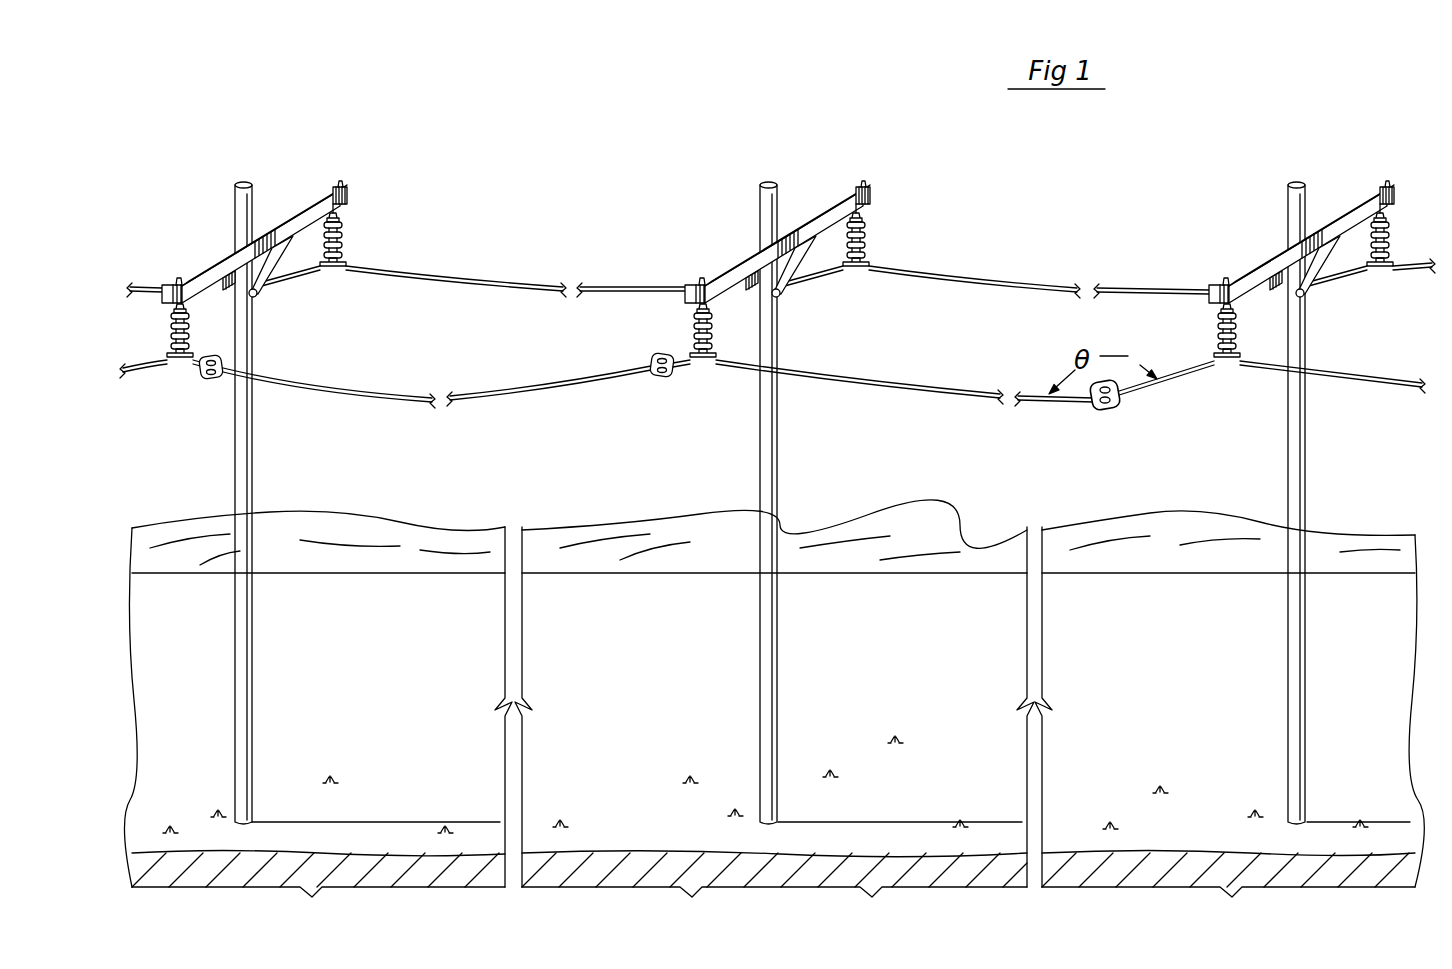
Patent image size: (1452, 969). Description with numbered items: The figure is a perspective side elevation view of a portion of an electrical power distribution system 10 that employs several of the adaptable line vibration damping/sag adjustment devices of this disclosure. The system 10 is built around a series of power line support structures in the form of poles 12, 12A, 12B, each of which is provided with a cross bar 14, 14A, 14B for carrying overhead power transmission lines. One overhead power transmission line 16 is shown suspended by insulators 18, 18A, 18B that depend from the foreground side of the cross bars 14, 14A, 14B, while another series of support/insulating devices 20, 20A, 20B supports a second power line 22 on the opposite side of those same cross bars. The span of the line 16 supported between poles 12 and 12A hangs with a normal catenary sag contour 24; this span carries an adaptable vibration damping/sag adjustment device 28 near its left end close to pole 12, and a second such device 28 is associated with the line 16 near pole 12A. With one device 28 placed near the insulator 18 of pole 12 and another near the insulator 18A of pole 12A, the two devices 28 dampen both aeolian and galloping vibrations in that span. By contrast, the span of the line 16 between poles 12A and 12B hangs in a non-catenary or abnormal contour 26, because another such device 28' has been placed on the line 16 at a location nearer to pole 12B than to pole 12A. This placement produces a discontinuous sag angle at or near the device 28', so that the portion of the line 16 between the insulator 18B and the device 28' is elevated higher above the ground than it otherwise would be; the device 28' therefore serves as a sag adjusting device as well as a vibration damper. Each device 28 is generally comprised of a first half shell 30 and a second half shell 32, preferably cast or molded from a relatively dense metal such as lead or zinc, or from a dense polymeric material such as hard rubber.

The electrical power distribution system 10 is at (710, 195).
The pole 12 is at (253, 662).
The pole 12A is at (778, 660).
The pole 12B is at (1307, 662).
The cross bar 14 is at (284, 220).
The cross bar 14A is at (810, 215).
The cross bar 14B is at (1340, 215).
The overhead power transmission line 16 is at (338, 400).
The insulator 18 is at (175, 362).
The insulator 18A is at (703, 362).
The insulator 18B is at (1227, 362).
The support/insulating device 20 is at (343, 240).
The support/insulating device 20A is at (866, 245).
The support/insulating device 20B is at (1390, 235).
The second power line 22 is at (486, 275).
The catenary sag contour 24 is at (493, 403).
The non-catenary sag contour 26 is at (1020, 403).
The power line vibration damping/sag adjustment device 28 is at (437, 348).
The power line vibration damping/sag adjustment device 28' is at (1129, 366).
The first half shell 30 is at (212, 358).
The second half shell 32 is at (206, 378).